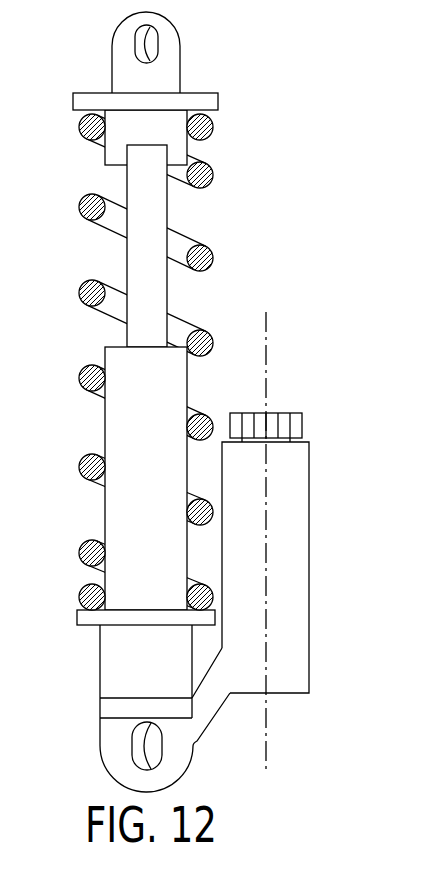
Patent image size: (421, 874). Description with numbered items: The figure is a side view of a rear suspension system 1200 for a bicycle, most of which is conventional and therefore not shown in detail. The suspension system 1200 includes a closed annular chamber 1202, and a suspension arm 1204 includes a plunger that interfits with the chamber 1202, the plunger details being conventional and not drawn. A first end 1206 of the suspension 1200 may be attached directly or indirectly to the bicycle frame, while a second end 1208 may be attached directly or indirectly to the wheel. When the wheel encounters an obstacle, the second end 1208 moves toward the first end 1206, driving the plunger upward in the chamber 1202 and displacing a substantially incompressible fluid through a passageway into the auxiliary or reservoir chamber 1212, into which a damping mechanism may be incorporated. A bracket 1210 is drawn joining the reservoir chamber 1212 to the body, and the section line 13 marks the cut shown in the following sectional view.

The suspension system 1200 is at (236, 184).
The closed annular chamber 1202 is at (117, 660).
The suspension arm 1204 is at (167, 212).
The first end 1206 is at (123, 784).
The second end 1208 is at (182, 62).
The bracket 1210 is at (214, 718).
The auxiliary or reservoir chamber 1212 is at (308, 615).
The section line 13- 13 is at (266, 773).